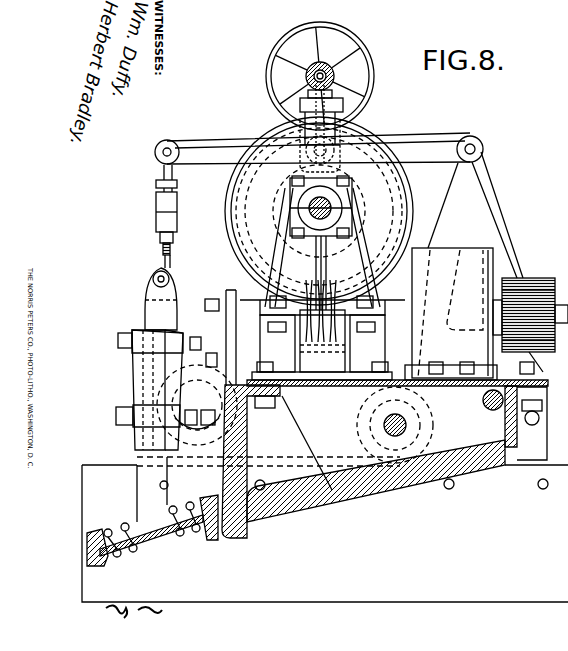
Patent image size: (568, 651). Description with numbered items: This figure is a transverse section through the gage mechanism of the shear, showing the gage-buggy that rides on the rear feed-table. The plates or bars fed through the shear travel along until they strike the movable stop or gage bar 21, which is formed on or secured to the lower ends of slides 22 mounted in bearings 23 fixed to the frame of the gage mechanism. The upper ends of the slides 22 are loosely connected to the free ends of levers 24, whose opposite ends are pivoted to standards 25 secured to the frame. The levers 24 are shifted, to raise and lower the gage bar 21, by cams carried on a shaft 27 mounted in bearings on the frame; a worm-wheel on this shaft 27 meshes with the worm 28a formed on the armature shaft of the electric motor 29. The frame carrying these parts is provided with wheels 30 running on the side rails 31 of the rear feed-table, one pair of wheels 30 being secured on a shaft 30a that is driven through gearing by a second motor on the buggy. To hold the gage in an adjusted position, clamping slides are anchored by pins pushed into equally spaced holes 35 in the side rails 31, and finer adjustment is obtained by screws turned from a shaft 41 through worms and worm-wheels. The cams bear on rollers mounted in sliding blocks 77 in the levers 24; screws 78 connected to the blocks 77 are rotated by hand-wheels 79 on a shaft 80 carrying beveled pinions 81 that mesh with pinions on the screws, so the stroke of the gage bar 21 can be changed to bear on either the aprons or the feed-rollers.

The gage bar 21 is at (92, 566).
The slides 22 is at (137, 488).
The bearings 23 is at (137, 392).
The levers 24 is at (240, 131).
The standards 25 is at (512, 194).
The shaft 27 is at (305, 207).
The worm 28a is at (322, 330).
The electric motor 29 is at (455, 252).
The wheels 30 is at (199, 462).
The shaft 30a is at (384, 424).
The side rails 31 is at (113, 450).
The holes 35 is at (452, 489).
The shaft 41 is at (490, 406).
The sliding blocks 77 is at (352, 128).
The screws 78 is at (284, 98).
The hand-wheels 79 is at (279, 54).
The shaft 80 is at (314, 60).
The beveled pinions 81 is at (326, 68).